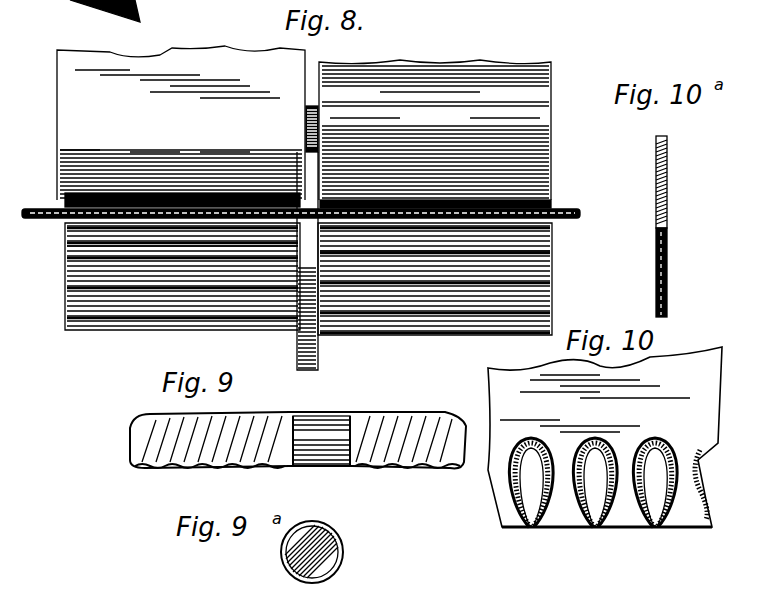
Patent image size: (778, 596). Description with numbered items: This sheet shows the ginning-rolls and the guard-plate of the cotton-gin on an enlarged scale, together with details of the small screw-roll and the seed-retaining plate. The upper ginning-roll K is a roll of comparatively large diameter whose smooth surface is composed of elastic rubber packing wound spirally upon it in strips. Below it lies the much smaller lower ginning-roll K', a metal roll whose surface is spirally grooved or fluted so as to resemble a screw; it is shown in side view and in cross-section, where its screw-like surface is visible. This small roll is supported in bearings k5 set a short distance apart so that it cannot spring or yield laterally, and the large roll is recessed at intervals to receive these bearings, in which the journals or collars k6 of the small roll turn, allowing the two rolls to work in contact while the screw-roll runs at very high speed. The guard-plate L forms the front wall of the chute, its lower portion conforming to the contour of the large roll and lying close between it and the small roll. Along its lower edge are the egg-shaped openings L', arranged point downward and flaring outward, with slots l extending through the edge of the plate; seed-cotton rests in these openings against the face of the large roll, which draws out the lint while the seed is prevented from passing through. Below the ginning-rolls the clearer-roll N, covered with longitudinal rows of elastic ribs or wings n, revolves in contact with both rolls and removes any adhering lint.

In FIG. 8, the upper ginning-roll K is at (435, 130).
In FIG. 9, the upper ginning-roll K is at (298, 440).
In FIG. 9A, the upper ginning-roll K is at (326, 552).
In FIG. 8, the lower ginning-roll K' is at (305, 198).
In FIG. 9, the lower ginning-roll K' is at (335, 423).
In FIG. 8, the bearings k5 is at (307, 238).
In FIG. 9, the journals or collars k6 is at (321, 441).
In FIG. 8, the guard-plate L is at (181, 123).
In FIG. 10A, the guard-plate L is at (671, 182).
In FIG. 10, the guard-plate L is at (605, 437).
In FIG. 10A, the egg-shaped openings L' is at (676, 272).
In FIG. 8, the clearer-roll N is at (308, 279).
In FIG. 8, the ribs or wings n is at (432, 342).
In FIG. 10, the slots l is at (655, 536).